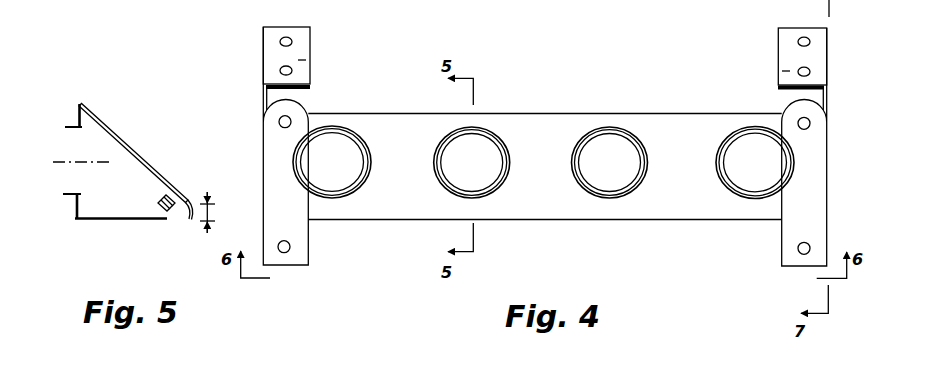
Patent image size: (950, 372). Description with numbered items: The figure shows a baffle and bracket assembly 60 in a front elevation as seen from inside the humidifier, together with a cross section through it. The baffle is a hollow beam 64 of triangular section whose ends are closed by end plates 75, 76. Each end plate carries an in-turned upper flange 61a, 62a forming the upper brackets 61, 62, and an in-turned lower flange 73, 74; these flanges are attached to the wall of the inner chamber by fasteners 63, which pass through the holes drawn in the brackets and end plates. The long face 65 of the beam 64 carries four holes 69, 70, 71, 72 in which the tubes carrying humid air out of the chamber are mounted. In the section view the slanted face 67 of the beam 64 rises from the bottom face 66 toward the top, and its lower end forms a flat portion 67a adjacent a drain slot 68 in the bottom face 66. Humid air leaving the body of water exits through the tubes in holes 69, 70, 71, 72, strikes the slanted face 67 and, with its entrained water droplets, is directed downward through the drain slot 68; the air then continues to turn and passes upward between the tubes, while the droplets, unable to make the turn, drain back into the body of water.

In FIG. 4, the baffle and bracket assembly 60 is at (564, 79).
In FIG. 4, the upper bracket 61 is at (312, 43).
In FIG. 4, the in-turned upper flange 61a is at (300, 60).
In FIG. 4, the upper bracket 62 is at (828, 62).
In FIG. 4, the in-turned upper flange 62a is at (788, 70).
In FIG. 4, the fasteners 63 is at (280, 70).
In FIG. 5, the hollow beam 64 is at (129, 129).
In FIG. 4, the face of beam 65 is at (400, 198).
In FIG. 5, the face of beam 65 is at (77, 112).
In FIG. 4, the bottom face of beam 66 is at (550, 221).
In FIG. 5, the bottom face of beam 66 is at (110, 221).
In FIG. 5, the slanted face 67 is at (132, 152).
In FIG. 5, the flat portion of slant face 67a is at (206, 197).
In FIG. 5, the drain slot 68 is at (176, 215).
In FIG. 4, the hole for tube 69 is at (367, 140).
In FIG. 4, the hole for tube 70 is at (508, 157).
In FIG. 5, the hole for tube 70 is at (97, 163).
In FIG. 4, the hole for tube 71 is at (633, 131).
In FIG. 4, the hole for tube 72 is at (737, 130).
In FIG. 4, the in-turned lower flange 73 is at (309, 243).
In FIG. 4, the in-turned lower flange 74 is at (780, 238).
In FIG. 4, the end plate 75 is at (828, 195).
In FIG. 4, the end plate 76 is at (262, 174).